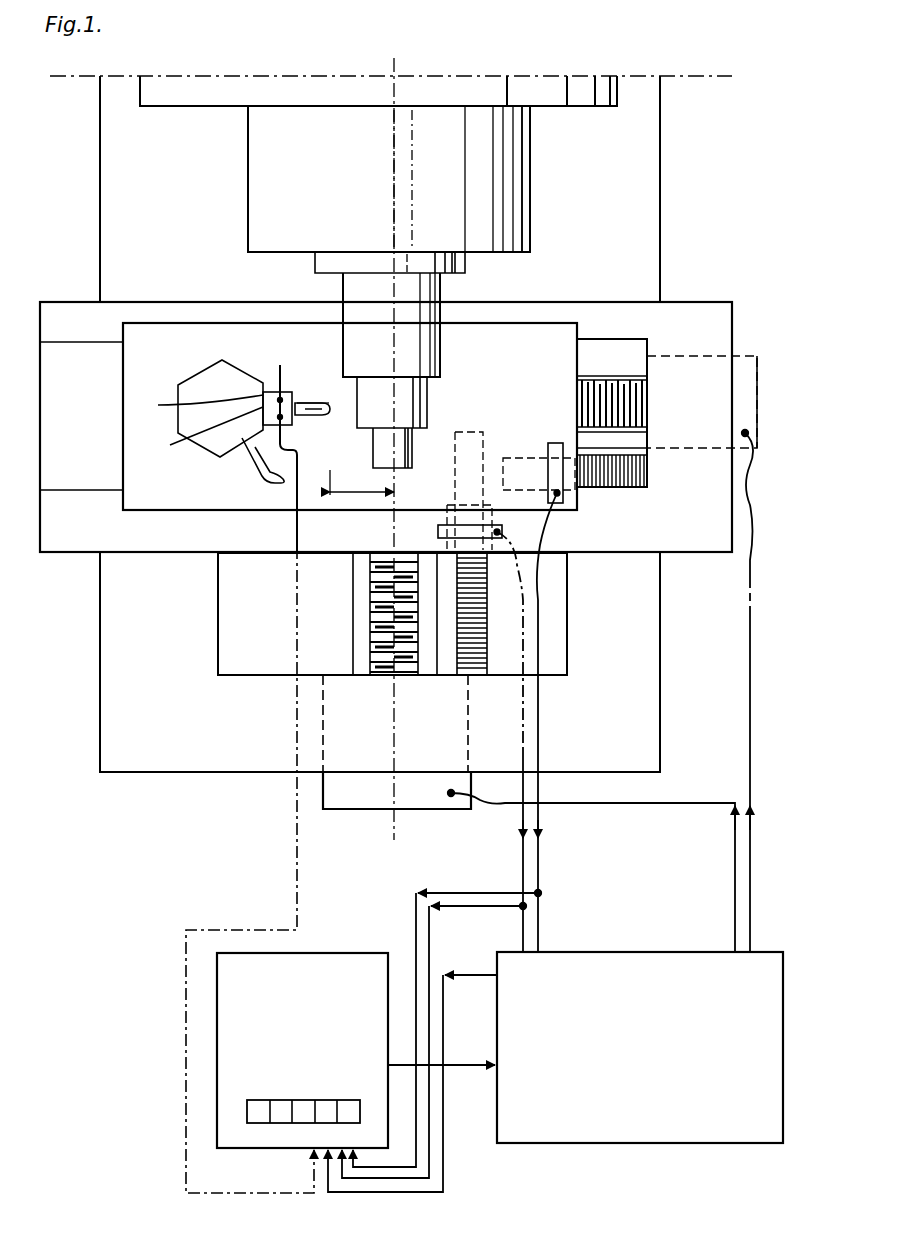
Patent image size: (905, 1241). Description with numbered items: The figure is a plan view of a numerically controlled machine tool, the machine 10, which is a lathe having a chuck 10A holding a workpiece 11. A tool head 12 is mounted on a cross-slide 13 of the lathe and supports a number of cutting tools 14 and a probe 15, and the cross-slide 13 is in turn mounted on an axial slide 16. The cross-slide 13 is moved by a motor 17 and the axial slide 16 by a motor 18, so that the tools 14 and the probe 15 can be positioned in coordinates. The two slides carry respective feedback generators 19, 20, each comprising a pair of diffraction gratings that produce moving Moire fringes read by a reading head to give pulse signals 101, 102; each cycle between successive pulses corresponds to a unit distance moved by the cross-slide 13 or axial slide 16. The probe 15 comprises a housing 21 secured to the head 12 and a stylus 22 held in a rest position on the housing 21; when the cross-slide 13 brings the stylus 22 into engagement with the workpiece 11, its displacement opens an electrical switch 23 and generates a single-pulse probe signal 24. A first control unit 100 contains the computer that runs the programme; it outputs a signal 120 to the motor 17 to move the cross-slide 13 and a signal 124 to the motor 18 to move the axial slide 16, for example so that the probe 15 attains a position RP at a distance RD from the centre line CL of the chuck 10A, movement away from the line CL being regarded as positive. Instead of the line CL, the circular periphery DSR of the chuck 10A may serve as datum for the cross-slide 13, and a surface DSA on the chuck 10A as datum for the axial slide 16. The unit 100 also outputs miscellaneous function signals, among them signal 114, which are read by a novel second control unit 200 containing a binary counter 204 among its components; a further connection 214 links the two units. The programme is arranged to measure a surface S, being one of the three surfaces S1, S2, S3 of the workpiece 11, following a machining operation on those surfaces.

The machine 10 is at (662, 222).
The chuck 10A is at (530, 222).
The workpiece 11 is at (440, 290).
The tool head 12 is at (188, 378).
The cross-slide 13 is at (167, 512).
The cutting tools 14 is at (253, 477).
The probe 15 is at (276, 390).
The axial slide 16 is at (690, 553).
The motor 17 is at (745, 358).
The motor 18 is at (345, 797).
The feedback generator 19 is at (600, 488).
The feedback generator 20 is at (567, 614).
The housing 21 is at (198, 405).
The stylus 22 is at (303, 403).
The electrical switch 23 is at (199, 433).
The probe signal 24 is at (295, 533).
The first control unit 100 is at (652, 1055).
The pulse signal 101 is at (523, 720).
The pulse signal 102 is at (538, 752).
The miscellaneous function signal 114 is at (487, 975).
The signal 120 is at (748, 675).
The signal 124 is at (693, 802).
The second control unit 200 is at (318, 1053).
The binary counter 204 is at (253, 1112).
The signal line 214 is at (480, 1067).
The circular periphery DSR is at (248, 142).
The surface DSA is at (270, 255).
The centre line CL is at (390, 176).
The surface S1 is at (440, 347).
The surface S2 is at (427, 402).
The surface S3 is at (412, 448).
The surface S is at (300, 403).
The position RP is at (304, 420).
The distance RD is at (362, 480).